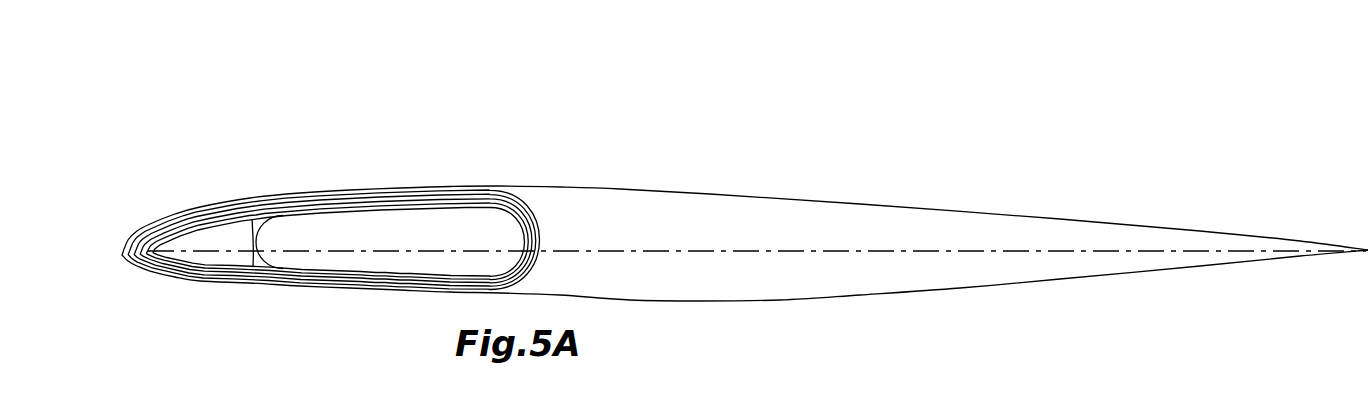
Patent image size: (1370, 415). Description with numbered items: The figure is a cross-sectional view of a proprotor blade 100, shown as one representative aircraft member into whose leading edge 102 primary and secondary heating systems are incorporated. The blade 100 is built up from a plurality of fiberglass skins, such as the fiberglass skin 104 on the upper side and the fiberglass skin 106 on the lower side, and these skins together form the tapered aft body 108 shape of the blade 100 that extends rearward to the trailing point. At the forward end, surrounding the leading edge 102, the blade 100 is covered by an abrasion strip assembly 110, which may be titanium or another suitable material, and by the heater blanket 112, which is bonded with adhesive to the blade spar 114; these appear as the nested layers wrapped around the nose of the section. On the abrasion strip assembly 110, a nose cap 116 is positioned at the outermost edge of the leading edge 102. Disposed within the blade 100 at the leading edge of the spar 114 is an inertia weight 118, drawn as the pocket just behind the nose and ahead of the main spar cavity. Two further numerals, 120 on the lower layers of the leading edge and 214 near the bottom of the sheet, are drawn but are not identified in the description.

The proprotor blade 100 is at (717, 233).
The leading edge 102 is at (121, 254).
The fiberglass skin 104 is at (710, 194).
The fiberglass skin 106 is at (633, 300).
The aft body 108 is at (808, 217).
The abrasion strip assembly 110 is at (329, 289).
The heater blanket 112 is at (412, 195).
The blade spar 114 is at (287, 196).
The nose cap 116 is at (120, 264).
The inertia weight 118 is at (220, 235).
The ply layer 120 is at (231, 280).
The reference numeral 214 is at (868, 405).